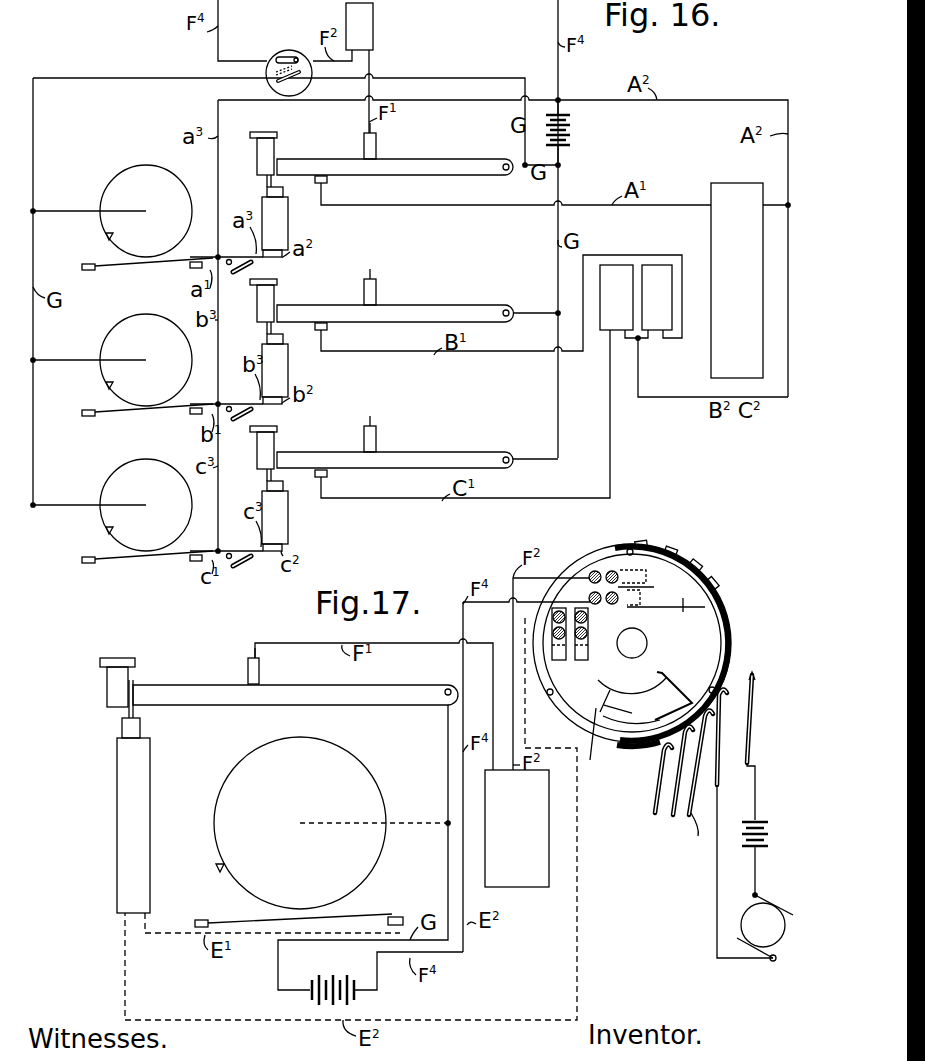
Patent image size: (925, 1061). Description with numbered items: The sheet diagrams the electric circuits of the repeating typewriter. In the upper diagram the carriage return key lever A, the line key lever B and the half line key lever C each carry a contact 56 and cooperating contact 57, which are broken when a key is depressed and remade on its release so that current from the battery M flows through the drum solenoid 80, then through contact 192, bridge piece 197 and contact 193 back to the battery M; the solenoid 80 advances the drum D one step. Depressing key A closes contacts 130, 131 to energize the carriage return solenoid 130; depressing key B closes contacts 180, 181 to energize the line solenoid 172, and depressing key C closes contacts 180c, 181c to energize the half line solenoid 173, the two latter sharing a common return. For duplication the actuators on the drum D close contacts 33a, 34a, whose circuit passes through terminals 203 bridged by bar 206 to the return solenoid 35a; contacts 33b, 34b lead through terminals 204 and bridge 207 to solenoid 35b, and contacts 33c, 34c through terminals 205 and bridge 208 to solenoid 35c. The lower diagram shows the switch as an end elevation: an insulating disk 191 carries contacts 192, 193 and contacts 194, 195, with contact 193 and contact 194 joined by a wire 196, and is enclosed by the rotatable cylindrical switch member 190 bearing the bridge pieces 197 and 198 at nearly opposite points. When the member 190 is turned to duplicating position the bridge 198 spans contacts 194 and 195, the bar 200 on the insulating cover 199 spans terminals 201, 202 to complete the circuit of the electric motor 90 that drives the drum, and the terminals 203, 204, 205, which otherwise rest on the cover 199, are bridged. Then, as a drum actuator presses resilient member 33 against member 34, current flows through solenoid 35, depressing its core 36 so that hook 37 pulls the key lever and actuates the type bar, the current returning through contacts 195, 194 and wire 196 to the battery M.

In FIG. 16, the solenoid 80 is at (360, 68).
In FIG. 17, the solenoid 80 is at (517, 828).
In FIG. 16, the contact 193 is at (279, 57).
In FIG. 17, the contact 193 is at (593, 570).
In FIG. 16, the bridge piece 197 is at (290, 57).
In FIG. 17, the bridge piece 197 is at (683, 607).
In FIG. 16, the contact 192 is at (308, 58).
In FIG. 17, the contact 192 is at (612, 570).
In FIG. 16, the contact 195 is at (276, 73).
In FIG. 17, the contact 195 is at (570, 672).
In FIG. 16, the contact 57 is at (375, 135).
In FIG. 17, the contact 57 is at (260, 660).
In FIG. 16, the contact 56 is at (378, 150).
In FIG. 17, the contact 56 is at (261, 670).
In FIG. 16, the carriage return solenoid 130 is at (327, 180).
In FIG. 16, the switch contact 131 is at (345, 193).
In FIG. 16, the solenoid 35a is at (284, 218).
In FIG. 16, the solenoid 35b is at (284, 365).
In FIG. 16, the solenoid 35c is at (284, 512).
In FIG. 16, the contact 33a is at (189, 260).
In FIG. 16, the contact 34a is at (190, 266).
In FIG. 16, the contact 33b is at (189, 406).
In FIG. 16, the contact 34b is at (190, 412).
In FIG. 16, the contact 33c is at (189, 553).
In FIG. 16, the contact 34c is at (190, 560).
In FIG. 16, the terminals 203 is at (230, 258).
In FIG. 17, the terminals 203 is at (691, 783).
In FIG. 16, the terminals 204 is at (230, 404).
In FIG. 17, the terminals 204 is at (672, 822).
In FIG. 16, the terminals 205 is at (232, 552).
In FIG. 17, the terminals 205 is at (660, 785).
In FIG. 16, the bridging bar 206 is at (239, 290).
In FIG. 17, the bridging bar 206 is at (678, 550).
In FIG. 16, the bridging bar 207 is at (239, 439).
In FIG. 17, the bridging bar 207 is at (700, 566).
In FIG. 16, the bridging bar 208 is at (252, 560).
In FIG. 17, the bridging bar 208 is at (716, 584).
In FIG. 16, the contact 180 is at (327, 327).
In FIG. 16, the contact 181 is at (345, 339).
In FIG. 16, the contact 180c is at (327, 474).
In FIG. 16, the contact 181c is at (350, 486).
In FIG. 16, the half line solenoid 173 is at (616, 297).
In FIG. 16, the line solenoid 172 is at (657, 297).
In FIG. 17, the hook 37 is at (133, 685).
In FIG. 17, the core 36 is at (122, 728).
In FIG. 17, the solenoid 35 is at (117, 832).
In FIG. 17, the resilient contact member 33 is at (383, 916).
In FIG. 17, the cooperating contact member 34 is at (400, 916).
In FIG. 17, the cylindrical switch member 190 is at (722, 638).
In FIG. 17, the insulating disk 191 is at (598, 745).
In FIG. 17, the contact 194 is at (585, 634).
In FIG. 17, the wire 196 is at (600, 600).
In FIG. 17, the bridge piece 198 is at (658, 675).
In FIG. 17, the insulating cover 199 is at (732, 640).
In FIG. 17, the bar 200 is at (648, 542).
In FIG. 17, the terminal 201 is at (751, 730).
In FIG. 17, the terminal 202 is at (722, 735).
In FIG. 17, the electric motor 90 is at (763, 925).
In FIG. 16, the carriage return key lever A is at (273, 136).
In FIG. 17, the carriage return key lever A is at (295, 679).
In FIG. 16, the line key lever B is at (273, 283).
In FIG. 16, the half line key lever C is at (273, 430).
In FIG. 16, the drum D is at (112, 358).
In FIG. 17, the drum D is at (332, 823).
In FIG. 16, the battery M is at (574, 138).
In FIG. 17, the battery M is at (318, 975).